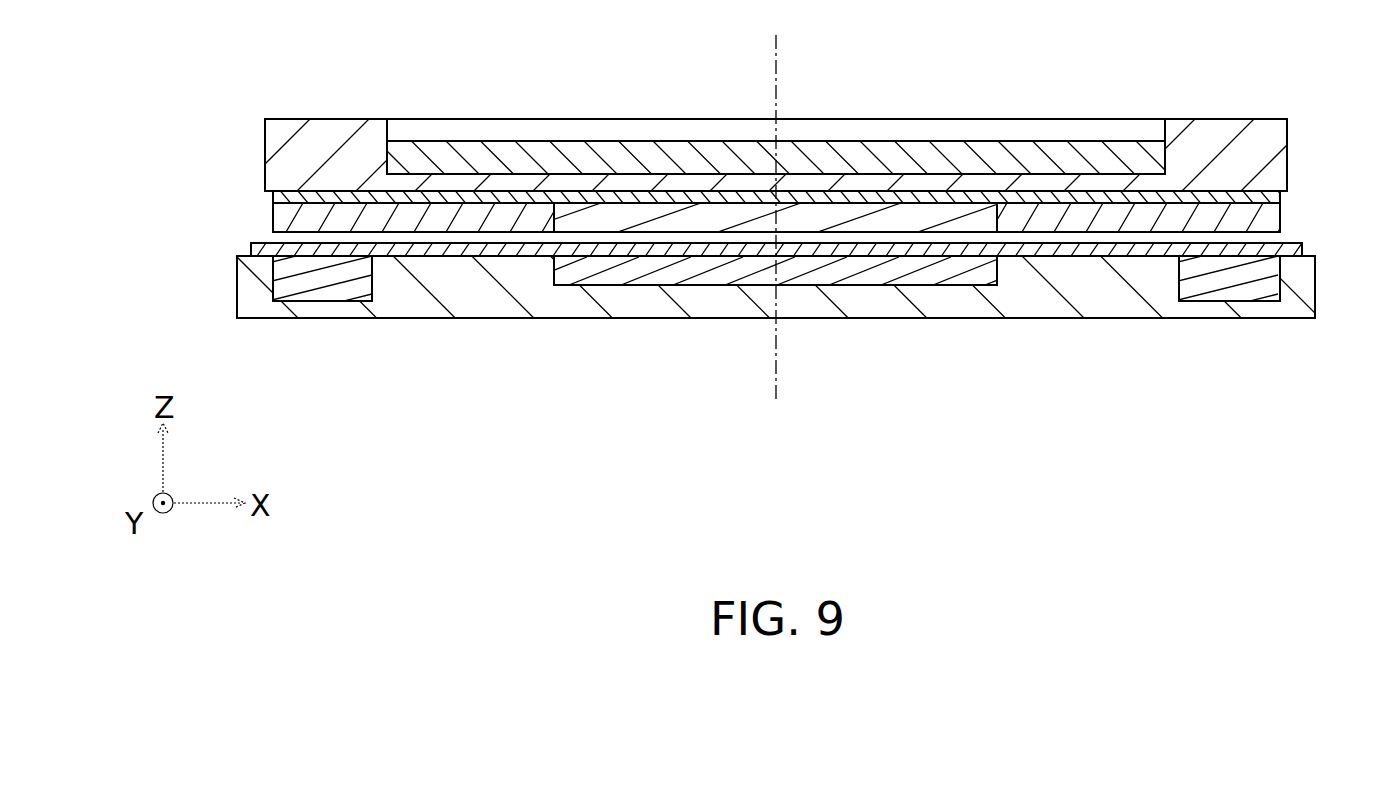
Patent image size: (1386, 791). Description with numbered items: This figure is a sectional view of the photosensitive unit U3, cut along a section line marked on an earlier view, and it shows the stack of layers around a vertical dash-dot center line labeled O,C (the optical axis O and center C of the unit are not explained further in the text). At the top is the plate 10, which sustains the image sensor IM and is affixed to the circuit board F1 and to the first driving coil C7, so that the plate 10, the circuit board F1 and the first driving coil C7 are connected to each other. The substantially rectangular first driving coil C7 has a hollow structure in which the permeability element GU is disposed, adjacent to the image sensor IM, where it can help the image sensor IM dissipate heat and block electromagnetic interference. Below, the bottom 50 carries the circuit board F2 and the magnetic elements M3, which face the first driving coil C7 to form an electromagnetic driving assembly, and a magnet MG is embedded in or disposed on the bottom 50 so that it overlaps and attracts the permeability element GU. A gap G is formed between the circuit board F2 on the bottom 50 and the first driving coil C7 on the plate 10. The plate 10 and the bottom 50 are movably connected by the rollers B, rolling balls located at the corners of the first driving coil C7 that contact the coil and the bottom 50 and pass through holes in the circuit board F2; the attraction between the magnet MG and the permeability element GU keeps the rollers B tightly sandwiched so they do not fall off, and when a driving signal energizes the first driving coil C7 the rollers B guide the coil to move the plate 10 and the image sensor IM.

The photosensitive unit U3 is at (200, 35).
The plate 10 is at (298, 156).
The image sensor IM is at (632, 157).
The permeability element GU is at (915, 218).
The circuit board F1 is at (1226, 197).
The circuit board F2 is at (1290, 242).
The first driving coil C7 is at (308, 220).
The roller B is at (383, 238).
The gap G is at (500, 238).
The magnet MG is at (640, 270).
The magnetic element M3 is at (323, 277).
The bottom 50 is at (1032, 297).
The optical axis O and center C O,C is at (776, 200).
The optical axis O is at (776, 200).
The center C is at (776, 200).